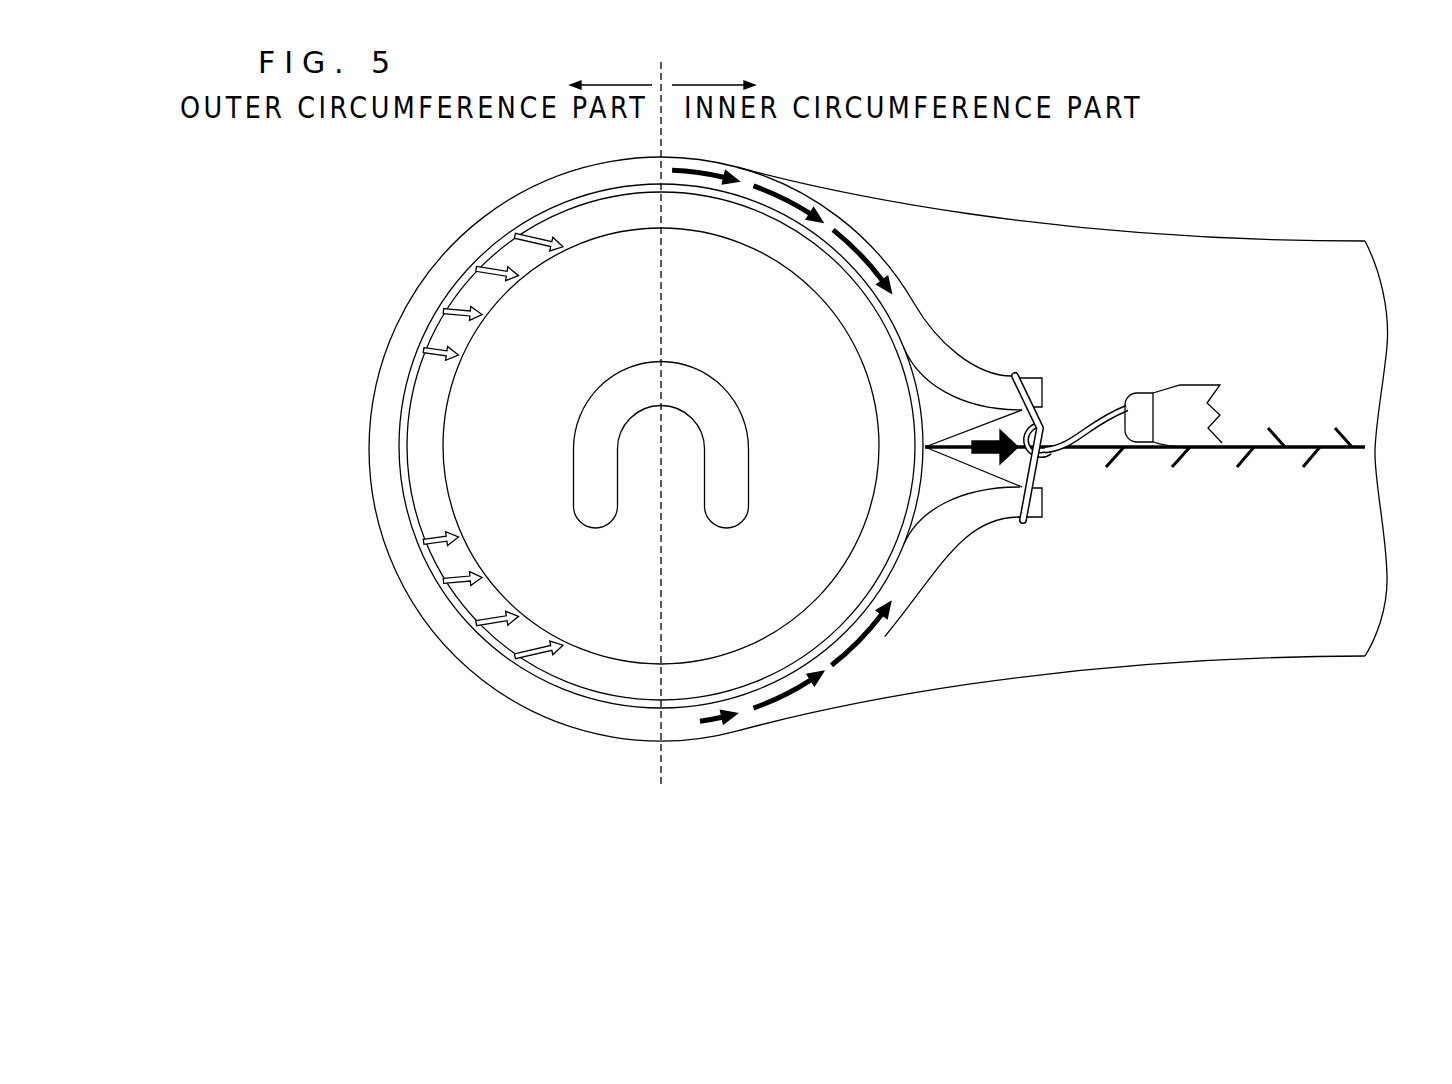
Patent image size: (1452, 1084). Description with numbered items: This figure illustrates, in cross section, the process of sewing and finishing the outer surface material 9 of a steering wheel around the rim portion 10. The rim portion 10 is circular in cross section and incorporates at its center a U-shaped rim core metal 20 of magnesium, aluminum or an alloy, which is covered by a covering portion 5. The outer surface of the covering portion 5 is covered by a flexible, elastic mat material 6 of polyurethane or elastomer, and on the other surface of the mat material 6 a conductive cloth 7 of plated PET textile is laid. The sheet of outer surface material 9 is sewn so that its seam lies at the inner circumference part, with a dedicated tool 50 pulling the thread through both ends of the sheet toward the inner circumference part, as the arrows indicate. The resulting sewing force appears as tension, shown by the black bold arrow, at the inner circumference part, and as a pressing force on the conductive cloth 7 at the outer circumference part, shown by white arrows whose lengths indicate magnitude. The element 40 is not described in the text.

The rim portion 10 is at (872, 182).
The covering portion 5 is at (478, 418).
The mat material 6 is at (628, 690).
The conductive cloth 7 is at (568, 688).
The outer surface material 9 is at (938, 558).
The rim core metal 20 is at (587, 468).
The holder 40 is at (1037, 470).
The dedicated tool 50 is at (1189, 383).